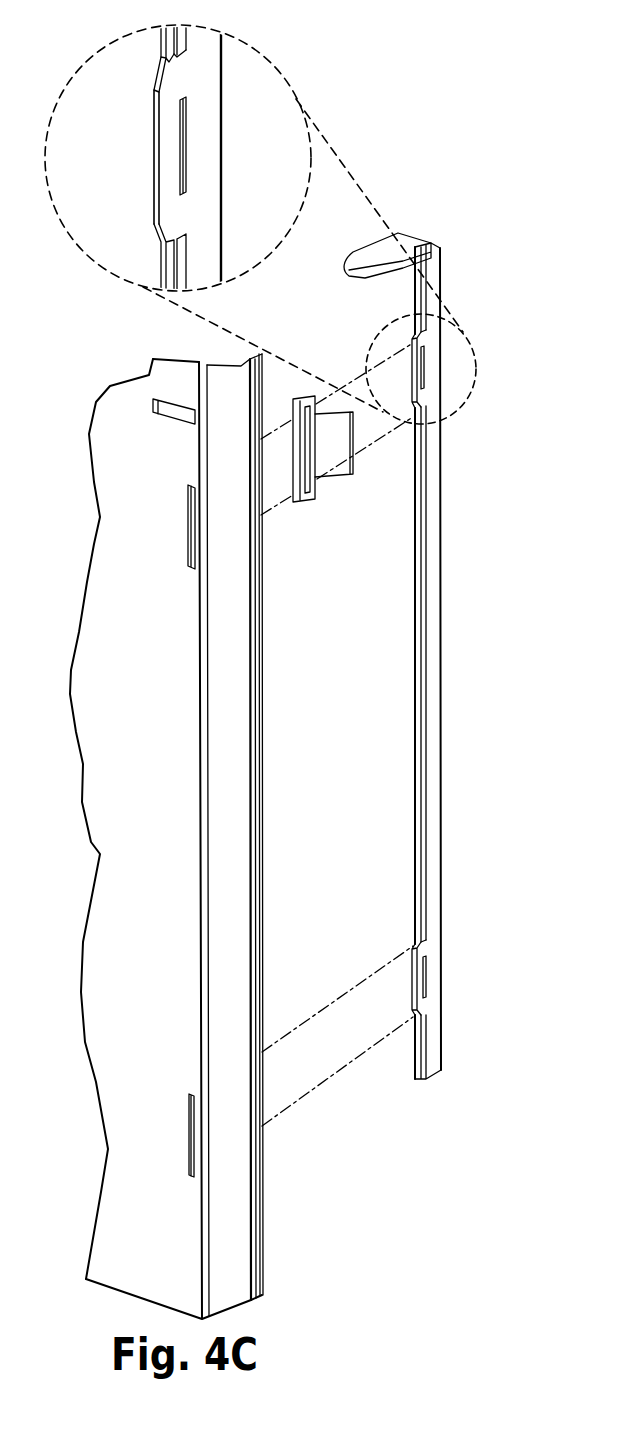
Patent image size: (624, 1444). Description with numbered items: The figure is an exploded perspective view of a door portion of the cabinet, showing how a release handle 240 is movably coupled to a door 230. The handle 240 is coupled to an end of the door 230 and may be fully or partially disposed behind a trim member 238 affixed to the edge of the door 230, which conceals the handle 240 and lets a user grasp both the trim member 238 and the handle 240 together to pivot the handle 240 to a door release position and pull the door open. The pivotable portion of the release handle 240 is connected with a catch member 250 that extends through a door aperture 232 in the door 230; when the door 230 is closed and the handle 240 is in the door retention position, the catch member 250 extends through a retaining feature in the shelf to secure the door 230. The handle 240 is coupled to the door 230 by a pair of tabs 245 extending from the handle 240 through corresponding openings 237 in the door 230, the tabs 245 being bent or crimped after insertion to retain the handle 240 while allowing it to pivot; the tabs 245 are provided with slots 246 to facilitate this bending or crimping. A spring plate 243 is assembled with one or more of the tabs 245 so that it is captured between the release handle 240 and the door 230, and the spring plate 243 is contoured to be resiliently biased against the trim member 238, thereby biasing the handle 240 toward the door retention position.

The door 230 is at (110, 915).
The door aperture 232 is at (170, 403).
The openings 237 is at (185, 536).
The trim member 238 is at (258, 762).
The release handle 240 is at (398, 681).
The spring plate 243 is at (313, 493).
The tabs 245 is at (416, 400).
The slots 246 is at (420, 365).
The catch member 250 is at (372, 262).